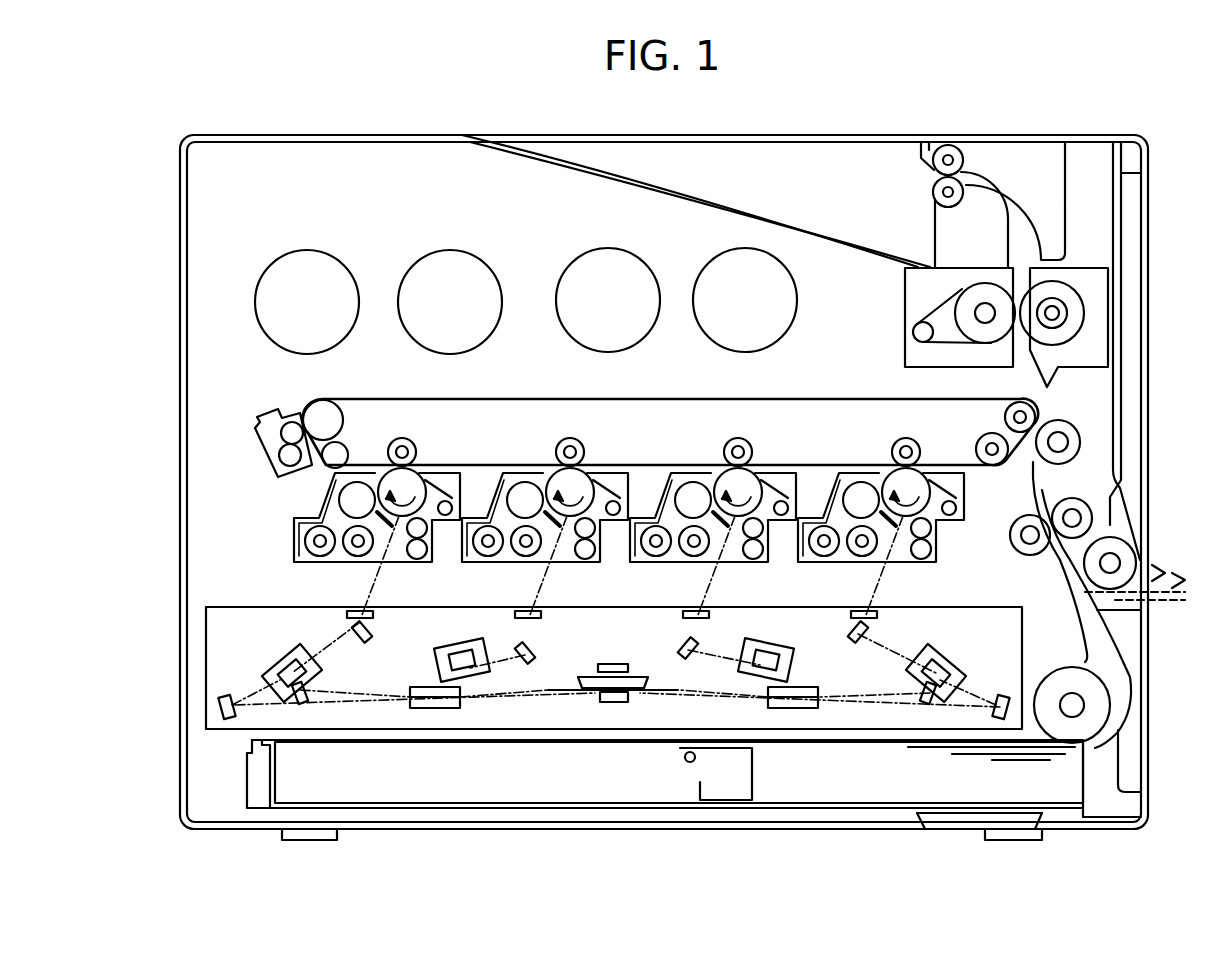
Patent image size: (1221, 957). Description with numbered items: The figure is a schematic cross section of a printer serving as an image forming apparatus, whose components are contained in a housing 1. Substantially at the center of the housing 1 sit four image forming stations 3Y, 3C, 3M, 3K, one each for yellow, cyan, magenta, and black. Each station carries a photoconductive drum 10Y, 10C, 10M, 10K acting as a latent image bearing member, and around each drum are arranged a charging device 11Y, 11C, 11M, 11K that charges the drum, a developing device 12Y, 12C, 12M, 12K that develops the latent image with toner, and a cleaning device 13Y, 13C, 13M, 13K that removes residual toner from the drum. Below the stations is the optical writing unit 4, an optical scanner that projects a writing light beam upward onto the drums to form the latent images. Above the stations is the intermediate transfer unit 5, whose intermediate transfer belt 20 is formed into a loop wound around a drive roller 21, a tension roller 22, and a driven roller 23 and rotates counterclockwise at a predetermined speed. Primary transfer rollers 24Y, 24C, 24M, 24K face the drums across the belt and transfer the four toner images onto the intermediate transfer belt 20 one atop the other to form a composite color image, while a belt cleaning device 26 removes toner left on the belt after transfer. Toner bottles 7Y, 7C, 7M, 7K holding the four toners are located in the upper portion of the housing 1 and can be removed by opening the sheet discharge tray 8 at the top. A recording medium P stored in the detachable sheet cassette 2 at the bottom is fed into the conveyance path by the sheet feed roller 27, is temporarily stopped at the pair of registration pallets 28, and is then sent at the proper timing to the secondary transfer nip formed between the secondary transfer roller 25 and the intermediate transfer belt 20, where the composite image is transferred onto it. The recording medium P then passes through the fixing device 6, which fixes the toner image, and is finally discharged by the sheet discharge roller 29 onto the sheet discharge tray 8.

The housing 1 is at (180, 536).
The sheet cassette 2 is at (665, 810).
The image forming station 3Y is at (391, 435).
The image forming station 3C is at (559, 435).
The image forming station 3M is at (727, 435).
The image forming station 3K is at (897, 435).
The optical writing unit 4 is at (230, 605).
The intermediate transfer unit 5 is at (619, 421).
The fixing device 6 is at (1088, 255).
The toner bottle 7Y is at (340, 262).
The toner bottle 7C is at (483, 262).
The toner bottle 7M is at (646, 262).
The toner bottle 7K is at (796, 284).
The sheet discharge tray 8 is at (762, 213).
The photoconductive drum 10Y is at (422, 472).
The photoconductive drum 10C is at (590, 472).
The photoconductive drum 10M is at (760, 472).
The photoconductive drum 10K is at (929, 472).
The charging device 11Y is at (392, 524).
The charging device 11C is at (566, 524).
The charging device 11M is at (736, 524).
The charging device 11K is at (904, 534).
The developing device 12Y is at (328, 540).
The developing device 12C is at (502, 544).
The developing device 12M is at (670, 543).
The developing device 12K is at (840, 543).
The cleaning device 13Y is at (463, 461).
The cleaning device 13C is at (631, 461).
The cleaning device 13M is at (801, 461).
The cleaning device 13K is at (970, 528).
The intermediate transfer belt 20 is at (798, 399).
The drive roller 21 is at (1008, 406).
The tension roller 22 is at (329, 464).
The driven roller 23 is at (309, 404).
The primary transfer roller 24Y is at (412, 434).
The primary transfer roller 24C is at (581, 434).
The primary transfer roller 24M is at (751, 434).
The primary transfer roller 24K is at (918, 434).
The secondary transfer roller 25 is at (1081, 441).
The belt cleaning device 26 is at (249, 426).
The sheet feed roller 27 is at (1070, 667).
The registration pallets 28 is at (1090, 494).
The sheet discharge roller 29 is at (975, 150).
The recording medium P is at (1023, 763).